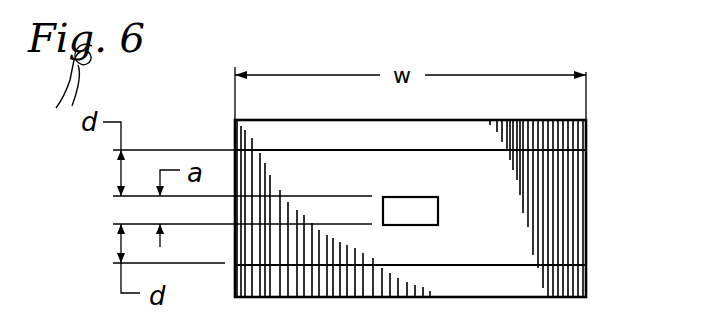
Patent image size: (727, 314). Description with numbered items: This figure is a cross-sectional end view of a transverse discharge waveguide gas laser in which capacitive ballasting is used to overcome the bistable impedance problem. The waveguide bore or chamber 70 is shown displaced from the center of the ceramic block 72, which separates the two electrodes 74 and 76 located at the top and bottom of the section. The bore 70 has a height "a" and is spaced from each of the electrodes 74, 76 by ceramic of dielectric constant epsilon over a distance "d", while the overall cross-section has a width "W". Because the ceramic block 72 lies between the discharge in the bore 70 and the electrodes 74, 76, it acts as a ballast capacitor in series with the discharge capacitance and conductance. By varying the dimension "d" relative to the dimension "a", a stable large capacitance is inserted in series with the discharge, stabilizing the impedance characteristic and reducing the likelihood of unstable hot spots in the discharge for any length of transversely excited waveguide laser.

The waveguide bore 70 is at (420, 196).
The ceramic block 72 is at (557, 202).
The electrode 74 is at (573, 138).
The electrode 76 is at (575, 280).